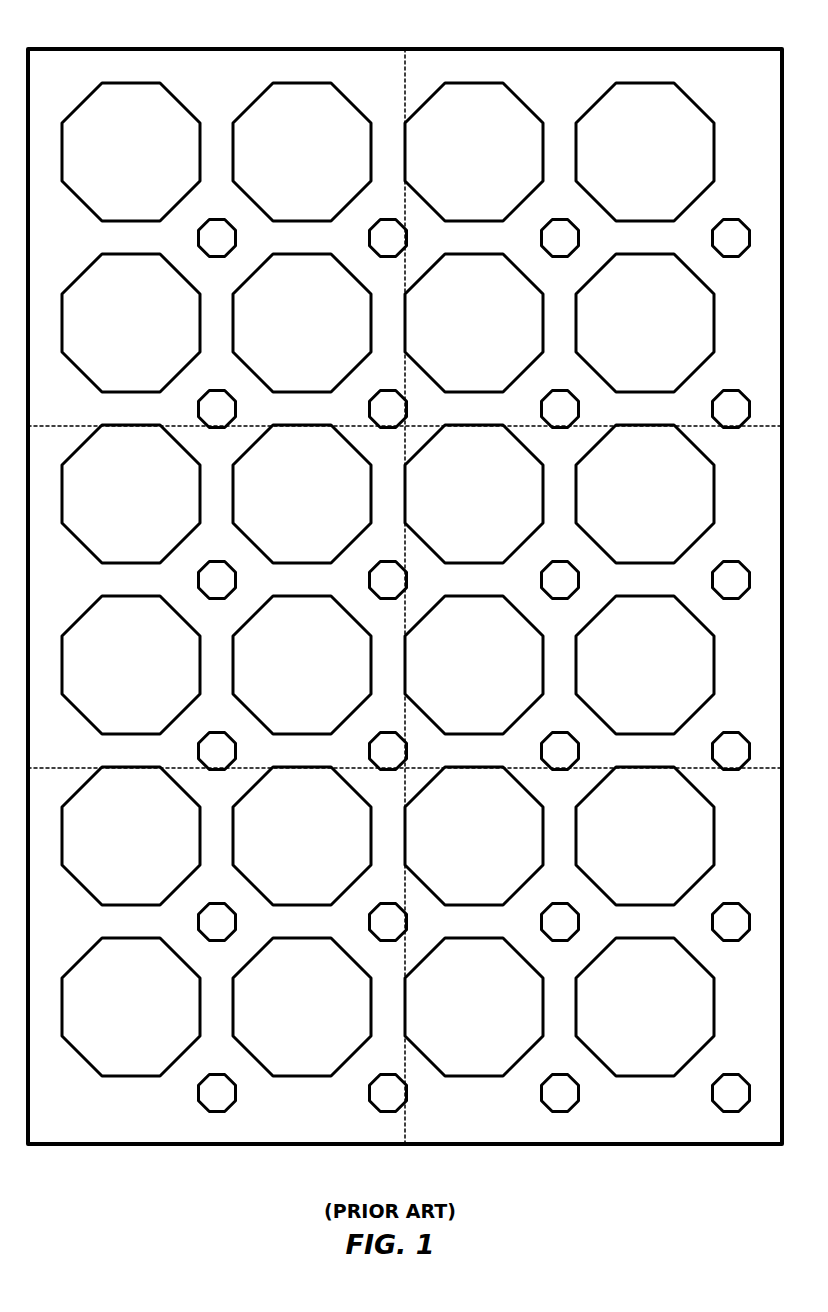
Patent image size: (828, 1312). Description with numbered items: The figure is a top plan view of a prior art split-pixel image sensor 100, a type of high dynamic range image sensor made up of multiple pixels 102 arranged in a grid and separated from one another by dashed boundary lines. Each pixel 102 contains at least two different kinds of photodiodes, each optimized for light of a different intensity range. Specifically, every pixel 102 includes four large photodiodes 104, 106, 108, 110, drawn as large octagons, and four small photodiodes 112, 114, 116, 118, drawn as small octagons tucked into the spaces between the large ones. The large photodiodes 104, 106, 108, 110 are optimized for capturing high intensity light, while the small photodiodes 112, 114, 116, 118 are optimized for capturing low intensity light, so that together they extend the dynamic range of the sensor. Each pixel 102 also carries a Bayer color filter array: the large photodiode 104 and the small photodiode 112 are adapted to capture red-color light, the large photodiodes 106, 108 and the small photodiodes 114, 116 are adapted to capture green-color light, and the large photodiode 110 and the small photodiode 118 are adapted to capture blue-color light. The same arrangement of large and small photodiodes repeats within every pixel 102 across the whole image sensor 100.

The split-pixel image sensor 100 is at (753, 49).
The pixel 102 is at (739, 83).
The large photodiode 104 is at (285, 334).
The large photodiode 106 is at (114, 334).
The large photodiode 108 is at (285, 163).
The large photodiode 110 is at (114, 163).
The small photodiode 112 is at (393, 409).
The small photodiode 114 is at (393, 238).
The small photodiode 116 is at (222, 409).
The small photodiode 118 is at (222, 238).